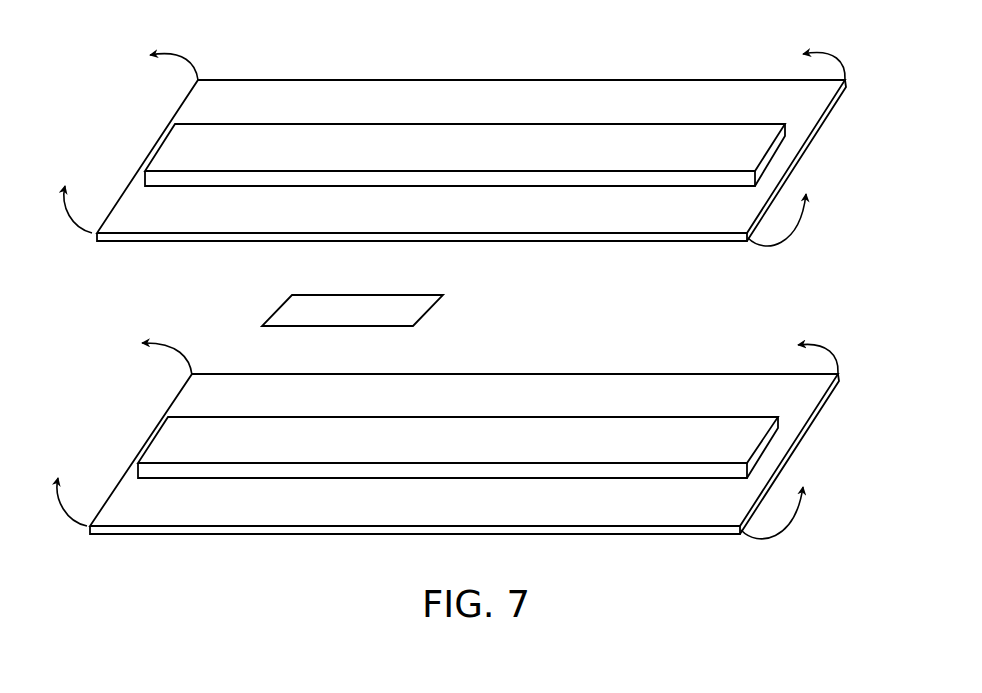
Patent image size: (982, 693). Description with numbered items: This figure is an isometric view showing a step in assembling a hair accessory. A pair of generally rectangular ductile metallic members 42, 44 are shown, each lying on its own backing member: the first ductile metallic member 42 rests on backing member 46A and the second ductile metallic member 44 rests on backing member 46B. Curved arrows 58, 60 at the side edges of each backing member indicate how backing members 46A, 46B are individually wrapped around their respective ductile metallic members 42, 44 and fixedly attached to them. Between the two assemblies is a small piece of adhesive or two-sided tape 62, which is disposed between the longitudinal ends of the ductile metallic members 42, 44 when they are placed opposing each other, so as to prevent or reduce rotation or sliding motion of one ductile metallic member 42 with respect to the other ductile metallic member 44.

The ductile metallic member 42 is at (463, 155).
The ductile metallic member 44 is at (457, 450).
The backing member 46A is at (745, 221).
The backing member 46B is at (739, 513).
The arrow 58 is at (431, 362).
The arrow 60 is at (503, 206).
The two-sided tape 62 is at (432, 306).